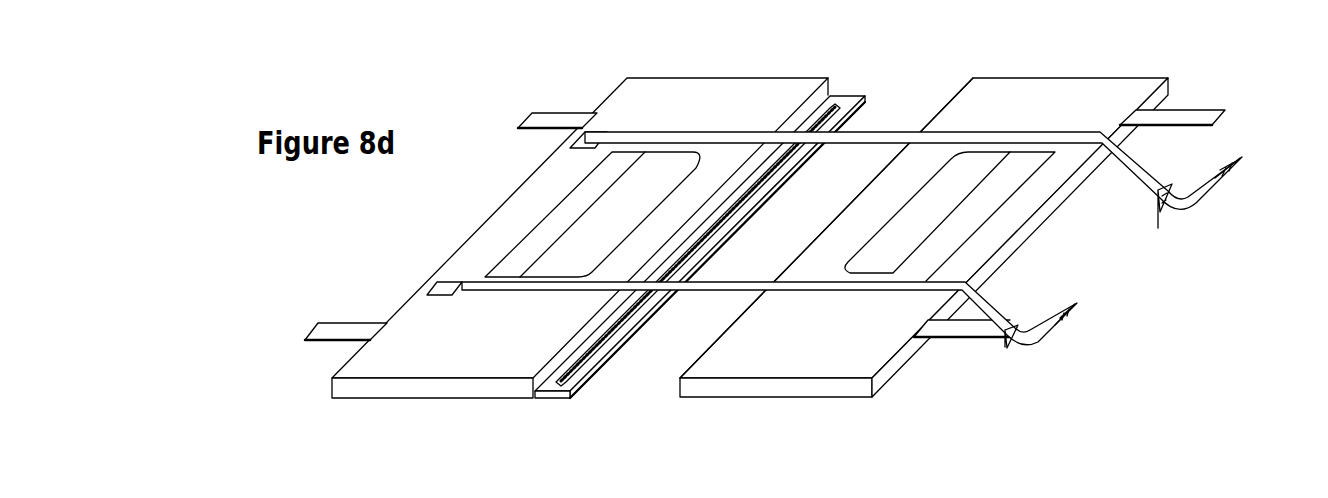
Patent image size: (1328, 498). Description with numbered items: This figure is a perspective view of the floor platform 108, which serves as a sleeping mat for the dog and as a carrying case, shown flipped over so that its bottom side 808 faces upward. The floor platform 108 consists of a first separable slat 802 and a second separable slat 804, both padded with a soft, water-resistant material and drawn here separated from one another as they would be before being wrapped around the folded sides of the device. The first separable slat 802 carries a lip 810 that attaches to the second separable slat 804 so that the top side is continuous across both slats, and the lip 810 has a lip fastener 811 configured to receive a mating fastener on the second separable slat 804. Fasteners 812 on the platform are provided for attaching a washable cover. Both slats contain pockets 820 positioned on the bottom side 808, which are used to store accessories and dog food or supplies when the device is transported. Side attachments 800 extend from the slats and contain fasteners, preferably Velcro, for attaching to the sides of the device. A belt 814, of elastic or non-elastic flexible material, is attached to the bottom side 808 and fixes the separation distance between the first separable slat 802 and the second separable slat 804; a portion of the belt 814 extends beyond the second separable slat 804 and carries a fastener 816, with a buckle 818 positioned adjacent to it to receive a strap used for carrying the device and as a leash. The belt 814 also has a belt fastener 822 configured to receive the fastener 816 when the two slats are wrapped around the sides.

The floor platform 108 is at (787, 233).
The side attachment 800 is at (563, 116).
The first separable slat 802 is at (456, 399).
The second separable slat 804 is at (798, 397).
The bottom side 808 is at (756, 108).
The lip 810 is at (561, 399).
The lip fastener 811 is at (568, 378).
The fasteners 812 is at (845, 357).
The belt 814 is at (882, 132).
The fastener 816 is at (1233, 170).
The buckle 818 is at (1159, 230).
The pockets 820 is at (597, 222).
The belt fastener 822 is at (594, 133).